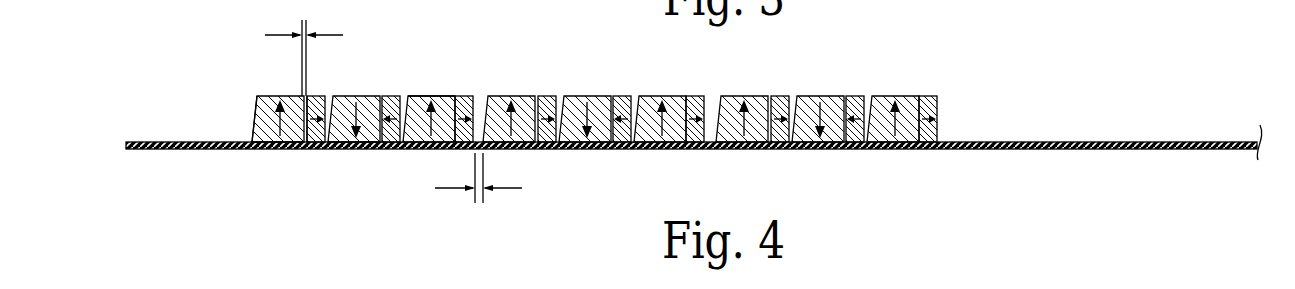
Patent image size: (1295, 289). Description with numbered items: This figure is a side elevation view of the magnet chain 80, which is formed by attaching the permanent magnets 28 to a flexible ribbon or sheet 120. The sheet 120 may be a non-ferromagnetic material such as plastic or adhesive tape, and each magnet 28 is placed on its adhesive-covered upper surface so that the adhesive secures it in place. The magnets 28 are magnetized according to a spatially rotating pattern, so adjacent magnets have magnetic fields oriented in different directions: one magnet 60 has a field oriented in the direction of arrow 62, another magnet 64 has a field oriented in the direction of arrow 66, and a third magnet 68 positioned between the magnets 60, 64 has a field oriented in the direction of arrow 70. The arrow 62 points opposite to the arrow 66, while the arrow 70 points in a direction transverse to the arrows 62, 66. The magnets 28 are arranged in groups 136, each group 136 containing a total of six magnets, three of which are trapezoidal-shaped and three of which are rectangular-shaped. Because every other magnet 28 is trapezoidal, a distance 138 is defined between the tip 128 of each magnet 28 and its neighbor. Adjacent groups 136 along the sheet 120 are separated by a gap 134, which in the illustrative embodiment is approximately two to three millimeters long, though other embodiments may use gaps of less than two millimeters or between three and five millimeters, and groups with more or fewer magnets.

The permanent magnet 28 is at (292, 151).
The magnet 60 is at (357, 96).
The arrow 62 is at (350, 97).
The magnet 64 is at (384, 96).
The arrow 66 is at (414, 104).
The third magnet 68 is at (441, 96).
The arrow 70 is at (455, 96).
The magnet chain 80 is at (630, 151).
The sheet 120 is at (1050, 150).
The tip 128 is at (257, 95).
The gap 134 is at (512, 190).
The group 136 is at (595, 165).
The distance 138 is at (333, 35).